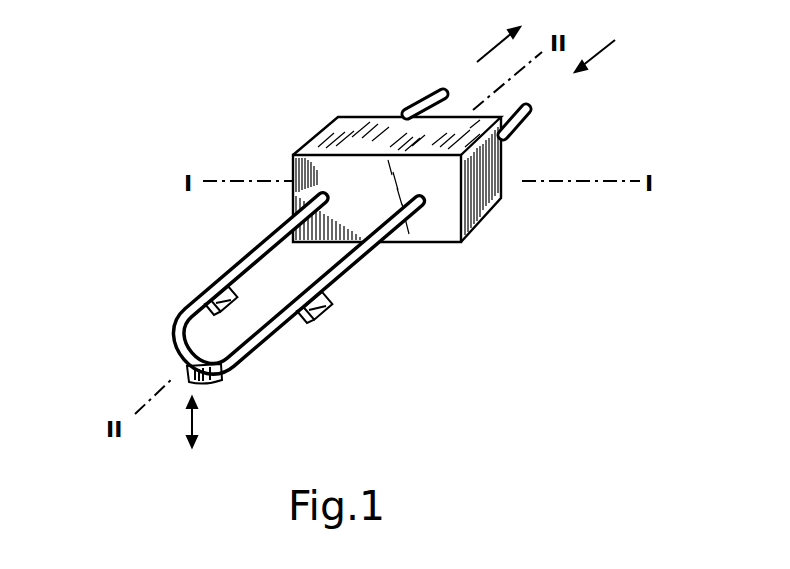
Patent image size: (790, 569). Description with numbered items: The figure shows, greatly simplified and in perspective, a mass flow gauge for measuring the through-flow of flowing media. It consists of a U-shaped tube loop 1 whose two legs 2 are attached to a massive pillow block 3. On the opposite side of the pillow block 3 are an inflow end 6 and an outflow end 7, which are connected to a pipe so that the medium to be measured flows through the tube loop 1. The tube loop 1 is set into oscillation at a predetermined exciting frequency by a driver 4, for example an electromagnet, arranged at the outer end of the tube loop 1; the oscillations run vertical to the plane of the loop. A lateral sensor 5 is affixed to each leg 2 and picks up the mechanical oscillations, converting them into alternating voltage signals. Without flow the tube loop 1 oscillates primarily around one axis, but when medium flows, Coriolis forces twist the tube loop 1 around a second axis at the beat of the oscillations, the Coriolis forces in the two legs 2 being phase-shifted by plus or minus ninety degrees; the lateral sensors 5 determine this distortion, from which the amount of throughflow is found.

The U-shaped tube loop 1 is at (254, 240).
The legs 2 is at (238, 270).
The pillow block 3 is at (313, 143).
The driver 4 is at (183, 370).
The lateral sensor 5 is at (200, 297).
The inflow end 6 is at (523, 121).
The outflow end 7 is at (416, 110).